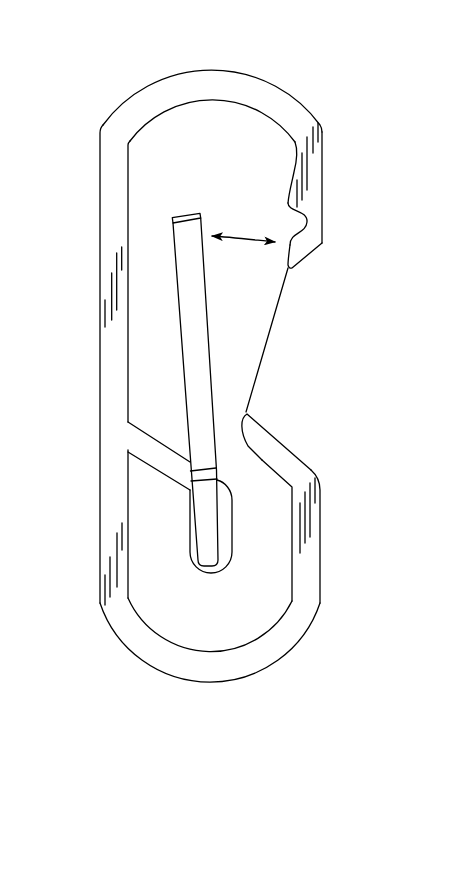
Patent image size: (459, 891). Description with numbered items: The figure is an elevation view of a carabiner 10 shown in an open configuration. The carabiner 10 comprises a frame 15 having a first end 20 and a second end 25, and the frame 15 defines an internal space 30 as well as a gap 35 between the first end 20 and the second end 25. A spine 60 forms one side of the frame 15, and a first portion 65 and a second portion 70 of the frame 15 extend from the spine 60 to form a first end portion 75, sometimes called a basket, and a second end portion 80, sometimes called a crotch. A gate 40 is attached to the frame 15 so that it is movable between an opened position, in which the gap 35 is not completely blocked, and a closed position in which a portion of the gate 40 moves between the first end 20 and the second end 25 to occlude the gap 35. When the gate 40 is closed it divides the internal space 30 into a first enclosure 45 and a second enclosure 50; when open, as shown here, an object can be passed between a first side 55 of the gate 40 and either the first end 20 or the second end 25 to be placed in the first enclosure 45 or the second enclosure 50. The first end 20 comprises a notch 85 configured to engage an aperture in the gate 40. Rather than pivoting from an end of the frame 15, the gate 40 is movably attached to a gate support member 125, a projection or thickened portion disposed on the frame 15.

The carabiner 10 is at (346, 54).
The frame 15 is at (99, 190).
The first end 20 is at (307, 276).
The second end 25 is at (258, 409).
The internal space 30 is at (230, 123).
The gap 35 is at (265, 352).
The gate 40 is at (202, 306).
The first enclosure 45 is at (275, 148).
The second enclosure 50 is at (268, 570).
The first side 55 is at (222, 377).
The spine 60 is at (105, 368).
The first portion 65 is at (182, 88).
The second portion 70 is at (160, 657).
The first end portion 75 is at (202, 104).
The second end portion 80 is at (207, 648).
The notch 85 is at (293, 227).
The gate support member 125 is at (152, 443).